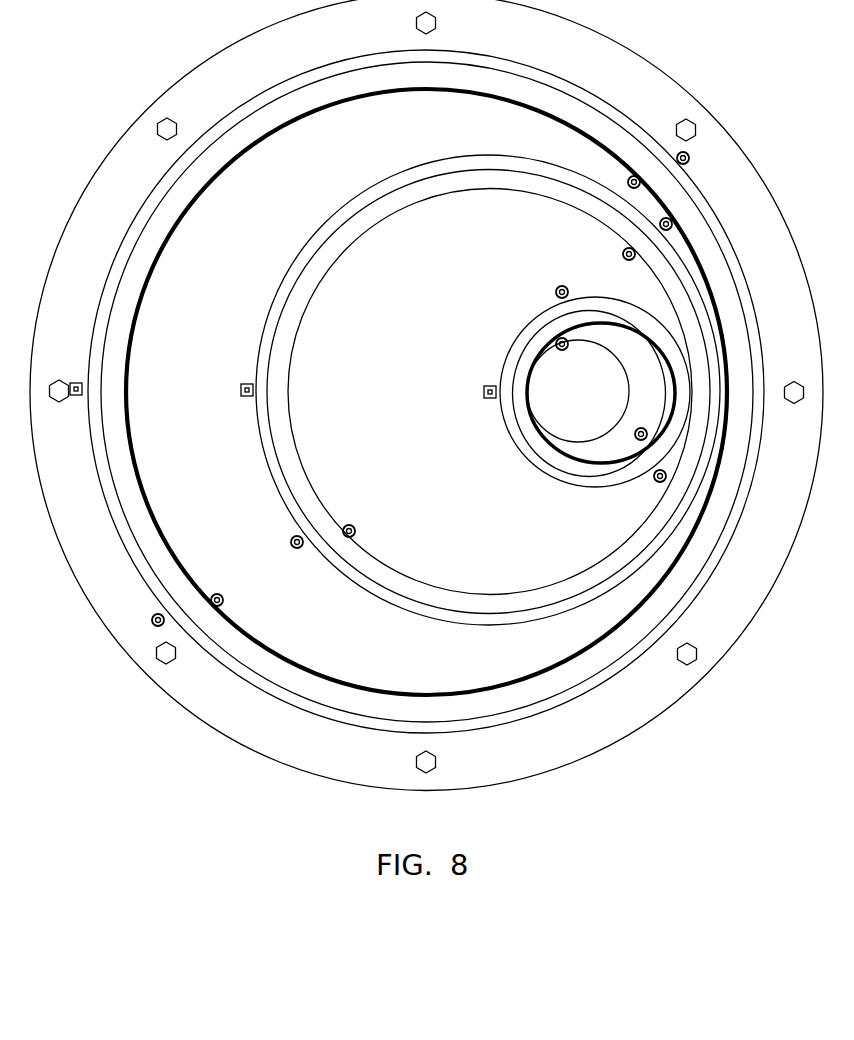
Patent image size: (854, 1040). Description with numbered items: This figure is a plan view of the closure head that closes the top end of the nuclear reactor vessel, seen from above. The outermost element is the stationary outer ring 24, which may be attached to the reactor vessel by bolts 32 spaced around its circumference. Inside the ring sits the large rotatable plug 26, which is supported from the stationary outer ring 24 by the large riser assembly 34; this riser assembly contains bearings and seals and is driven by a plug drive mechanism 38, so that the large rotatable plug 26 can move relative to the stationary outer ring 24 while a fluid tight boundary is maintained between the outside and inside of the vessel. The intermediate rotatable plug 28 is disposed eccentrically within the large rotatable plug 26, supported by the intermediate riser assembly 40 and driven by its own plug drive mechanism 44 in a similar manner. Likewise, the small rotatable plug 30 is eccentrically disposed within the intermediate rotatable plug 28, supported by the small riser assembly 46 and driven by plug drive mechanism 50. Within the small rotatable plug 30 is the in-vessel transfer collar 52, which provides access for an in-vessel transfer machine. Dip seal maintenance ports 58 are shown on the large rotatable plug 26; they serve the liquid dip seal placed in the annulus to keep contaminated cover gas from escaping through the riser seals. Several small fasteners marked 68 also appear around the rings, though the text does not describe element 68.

The stationary outer ring 24 is at (77, 325).
The large rotatable plug 26 is at (187, 380).
The intermediate rotatable plug 28 is at (385, 452).
The small rotatable plug 30 is at (657, 395).
The bolts 32 is at (679, 121).
The large riser assembly 34 is at (147, 198).
The plug drive mechanism 38 is at (75, 396).
The intermediate riser assembly 40 is at (300, 264).
The plug drive mechanism 44 is at (245, 397).
The small riser assembly 46 is at (536, 332).
The plug drive mechanism 50 is at (486, 398).
The in-vessel transfer collar 52 is at (590, 400).
The dip seal maintenance ports 58 is at (628, 180).
The lock washers 68 is at (629, 177).